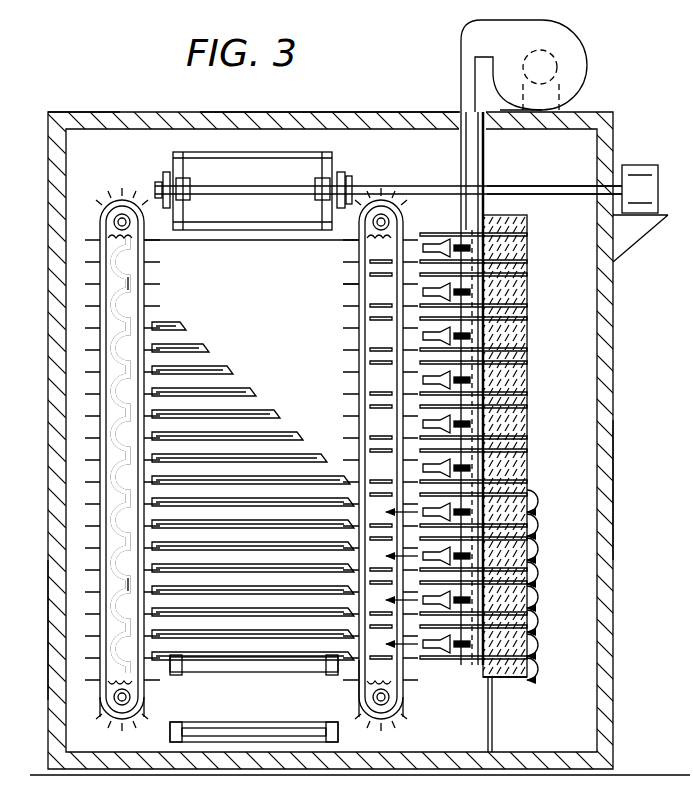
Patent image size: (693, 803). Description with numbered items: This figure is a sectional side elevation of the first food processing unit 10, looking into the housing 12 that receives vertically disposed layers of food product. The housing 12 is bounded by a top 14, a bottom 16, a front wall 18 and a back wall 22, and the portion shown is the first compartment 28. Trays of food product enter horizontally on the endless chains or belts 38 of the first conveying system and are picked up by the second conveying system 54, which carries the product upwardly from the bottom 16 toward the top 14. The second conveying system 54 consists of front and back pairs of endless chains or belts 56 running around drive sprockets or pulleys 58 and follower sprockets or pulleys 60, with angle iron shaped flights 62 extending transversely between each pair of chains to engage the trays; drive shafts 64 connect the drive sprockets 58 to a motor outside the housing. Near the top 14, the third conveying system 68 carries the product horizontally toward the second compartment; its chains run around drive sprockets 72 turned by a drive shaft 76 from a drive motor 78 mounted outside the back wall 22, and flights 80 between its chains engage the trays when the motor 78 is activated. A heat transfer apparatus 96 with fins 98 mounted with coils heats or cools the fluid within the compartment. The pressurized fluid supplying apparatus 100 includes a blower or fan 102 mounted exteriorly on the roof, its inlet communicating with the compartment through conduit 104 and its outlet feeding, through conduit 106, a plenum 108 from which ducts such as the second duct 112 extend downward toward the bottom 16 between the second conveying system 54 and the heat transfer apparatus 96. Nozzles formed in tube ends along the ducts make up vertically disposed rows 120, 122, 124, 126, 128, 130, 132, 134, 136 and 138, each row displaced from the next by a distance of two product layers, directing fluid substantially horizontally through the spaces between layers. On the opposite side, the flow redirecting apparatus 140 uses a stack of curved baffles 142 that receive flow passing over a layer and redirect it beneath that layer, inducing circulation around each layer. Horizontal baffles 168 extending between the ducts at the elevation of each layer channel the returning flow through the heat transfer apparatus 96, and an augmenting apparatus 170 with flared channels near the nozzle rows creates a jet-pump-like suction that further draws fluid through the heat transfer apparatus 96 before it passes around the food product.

The food processing unit 10 is at (78, 106).
The housing 12 is at (615, 147).
The top 14 is at (330, 112).
The bottom 16 is at (545, 750).
The front wall 18 is at (52, 625).
The back wall 22 is at (613, 497).
The first compartment 28 is at (592, 644).
The endless chains or belts 38 is at (320, 670).
The second conveying system 54 is at (410, 728).
The endless chains or belts 56 is at (108, 722).
The drive sprockets or pulleys 58 is at (100, 246).
The follower sprockets or pulleys 60 is at (100, 700).
The flights 62 is at (88, 393).
The drive shafts 64 is at (122, 215).
The third conveying system 68 is at (352, 183).
The drive sprockets 72 is at (388, 184).
The drive shaft 76 is at (547, 186).
The drive motor 78 is at (640, 170).
The flights 80 is at (276, 150).
The heat transfer apparatus 96 is at (532, 680).
The fins 98 is at (515, 240).
The pressurized fluid supplying apparatus 100 is at (597, 50).
The blower or fan 102 is at (560, 70).
The conduit 104 is at (563, 96).
The conduit 106 is at (461, 78).
The plenum 108 is at (478, 178).
The second duct 112 is at (462, 185).
The row of nozzles 120 is at (470, 248).
The row of nozzles 122 is at (470, 292).
The row of nozzles 124 is at (470, 336).
The row of nozzles 126 is at (470, 380).
The row of nozzles 128 is at (470, 424).
The row of nozzles 130 is at (470, 468).
The row of nozzles 132 is at (470, 512).
The row of nozzles 134 is at (470, 556).
The row of nozzles 136 is at (470, 600).
The row of nozzles 138 is at (470, 650).
The flow redirecting apparatus 140 is at (110, 314).
The curved baffles 142 is at (118, 258).
The horizontal baffles 168 is at (440, 212).
The augmenting apparatus 170 is at (362, 288).